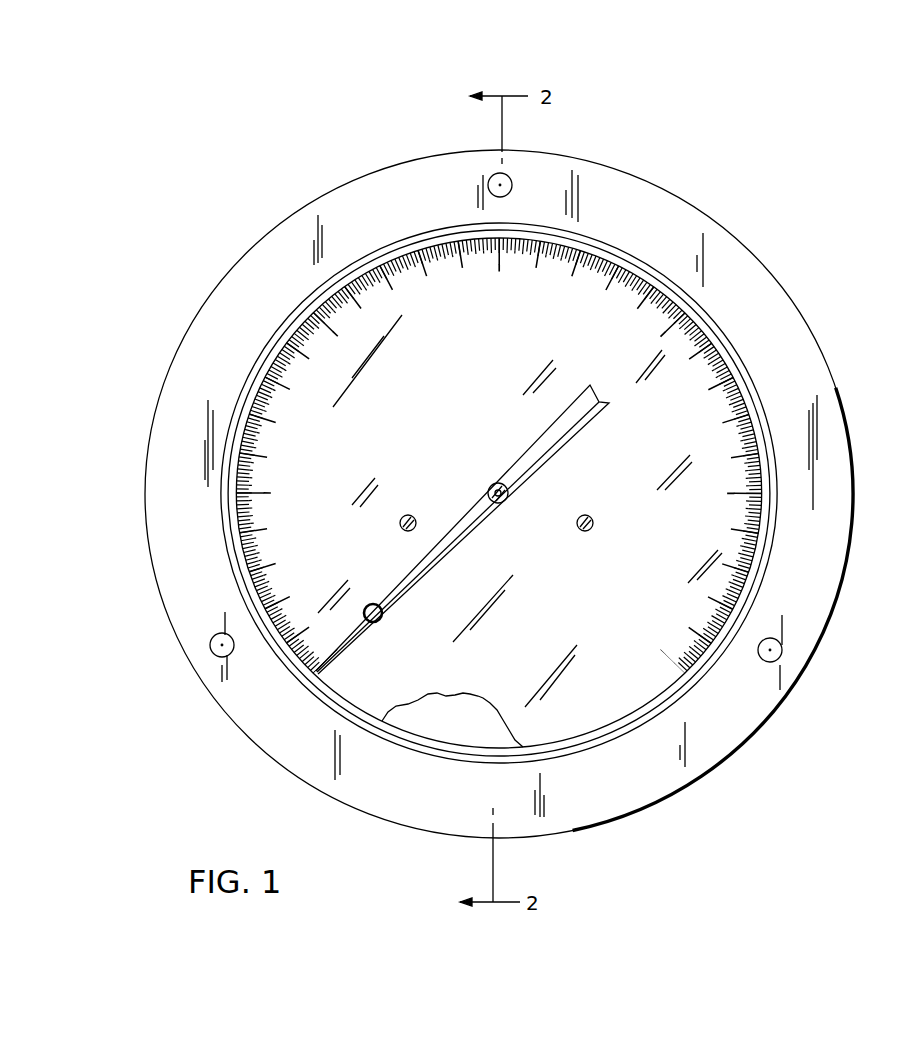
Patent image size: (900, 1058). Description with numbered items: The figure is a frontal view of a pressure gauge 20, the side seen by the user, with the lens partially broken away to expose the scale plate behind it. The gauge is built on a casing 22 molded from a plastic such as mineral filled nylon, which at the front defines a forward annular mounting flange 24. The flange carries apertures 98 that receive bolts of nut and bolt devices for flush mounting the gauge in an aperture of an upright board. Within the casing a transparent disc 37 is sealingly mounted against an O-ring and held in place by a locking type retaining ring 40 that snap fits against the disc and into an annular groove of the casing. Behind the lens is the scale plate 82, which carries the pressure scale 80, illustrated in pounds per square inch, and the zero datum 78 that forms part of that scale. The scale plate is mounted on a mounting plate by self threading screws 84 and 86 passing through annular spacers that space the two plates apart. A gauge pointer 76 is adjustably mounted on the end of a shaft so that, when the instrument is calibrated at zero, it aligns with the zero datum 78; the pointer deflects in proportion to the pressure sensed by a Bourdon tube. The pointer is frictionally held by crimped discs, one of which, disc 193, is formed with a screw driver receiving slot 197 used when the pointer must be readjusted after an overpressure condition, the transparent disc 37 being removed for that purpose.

The pressure gauge 20 is at (745, 203).
The casing 22 is at (819, 343).
The forward annular mounting flange 24 is at (660, 203).
The transparent disc 37 is at (605, 708).
The retaining ring 40 is at (682, 693).
The gauge pointer 76 is at (447, 550).
The zero datum 78 is at (377, 632).
The pressure scale 80 is at (278, 344).
The scale plate 82 is at (453, 723).
The self threading screw 84 is at (408, 513).
The self threading screw 86 is at (585, 513).
The apertures 98 is at (511, 184).
The disc 193 is at (494, 484).
The screw driver receiving slot 197 is at (503, 499).